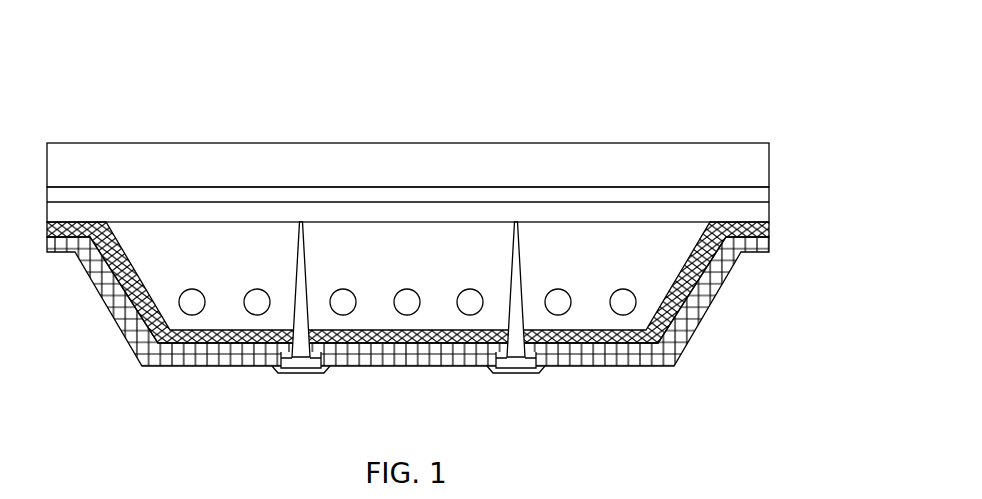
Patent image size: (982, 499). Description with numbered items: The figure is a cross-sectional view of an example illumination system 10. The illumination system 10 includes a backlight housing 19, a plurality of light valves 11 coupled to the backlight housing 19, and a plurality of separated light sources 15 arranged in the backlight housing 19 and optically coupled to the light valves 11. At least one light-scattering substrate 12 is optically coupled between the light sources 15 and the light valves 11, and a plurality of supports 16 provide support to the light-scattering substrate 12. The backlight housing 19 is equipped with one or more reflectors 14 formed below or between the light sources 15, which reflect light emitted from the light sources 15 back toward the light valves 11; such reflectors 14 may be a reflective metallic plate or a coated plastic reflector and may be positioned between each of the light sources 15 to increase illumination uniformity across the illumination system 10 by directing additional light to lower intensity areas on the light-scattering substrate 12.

The illumination system 10 is at (722, 96).
The light valves 11 is at (769, 147).
The light-scattering substrate 12 is at (769, 190).
The reflectors 14 is at (769, 230).
The light sources 15 is at (623, 315).
The supports 16 is at (515, 373).
The backlight housing 19 is at (715, 290).